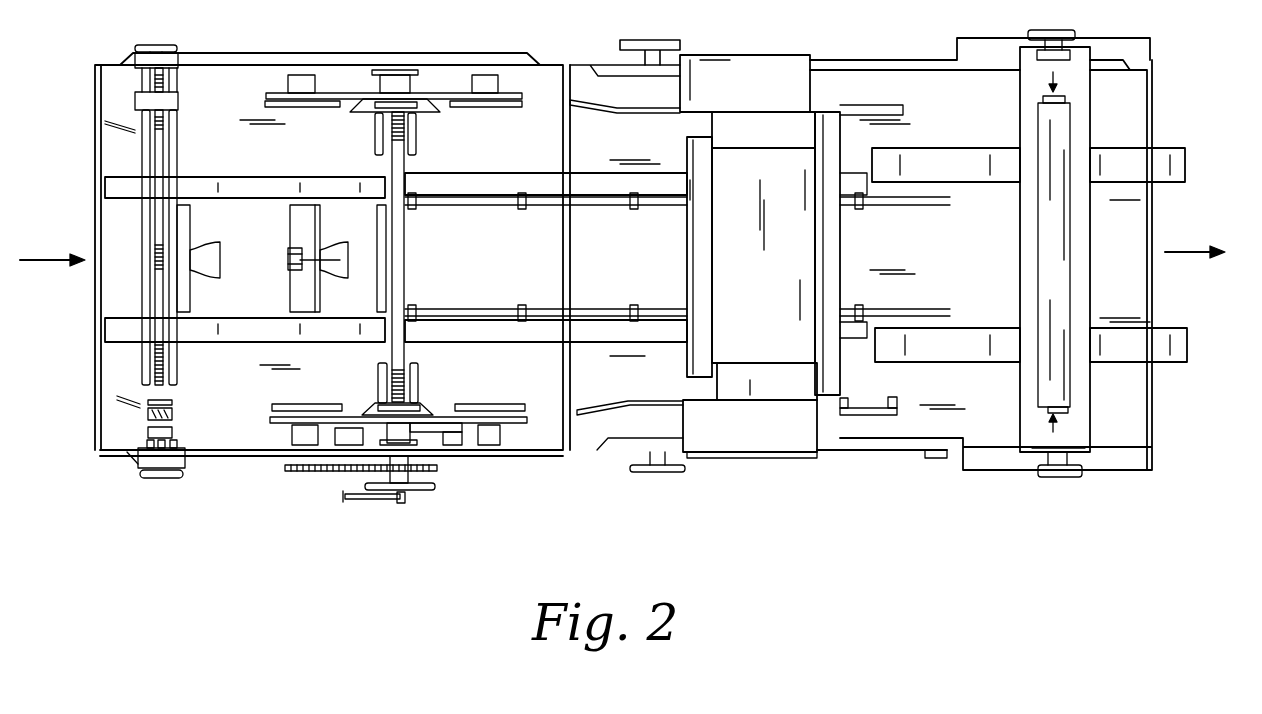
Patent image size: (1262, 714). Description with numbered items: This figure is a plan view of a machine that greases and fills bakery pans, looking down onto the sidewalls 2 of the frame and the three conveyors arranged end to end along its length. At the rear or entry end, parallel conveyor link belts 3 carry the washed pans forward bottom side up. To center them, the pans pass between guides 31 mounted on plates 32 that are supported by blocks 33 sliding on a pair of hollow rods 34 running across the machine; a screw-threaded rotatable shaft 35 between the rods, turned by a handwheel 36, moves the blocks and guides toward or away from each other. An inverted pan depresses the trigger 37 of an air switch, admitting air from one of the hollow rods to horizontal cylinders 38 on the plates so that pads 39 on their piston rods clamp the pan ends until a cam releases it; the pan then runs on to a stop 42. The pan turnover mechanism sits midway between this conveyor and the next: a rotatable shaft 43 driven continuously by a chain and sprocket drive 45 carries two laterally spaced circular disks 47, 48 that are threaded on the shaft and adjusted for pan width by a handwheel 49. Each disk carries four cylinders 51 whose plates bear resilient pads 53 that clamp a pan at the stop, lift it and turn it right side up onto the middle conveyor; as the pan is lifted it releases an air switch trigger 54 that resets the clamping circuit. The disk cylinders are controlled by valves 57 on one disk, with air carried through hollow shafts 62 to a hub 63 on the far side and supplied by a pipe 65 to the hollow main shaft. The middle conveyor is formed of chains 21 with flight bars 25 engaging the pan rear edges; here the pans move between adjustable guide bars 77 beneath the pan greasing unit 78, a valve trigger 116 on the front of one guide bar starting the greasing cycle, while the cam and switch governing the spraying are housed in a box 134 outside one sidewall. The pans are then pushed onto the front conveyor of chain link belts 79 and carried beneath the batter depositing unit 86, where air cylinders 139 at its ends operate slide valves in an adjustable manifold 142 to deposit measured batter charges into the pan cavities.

The sidewalls 2 is at (595, 65).
The conveyor link belts 3 is at (249, 200).
The chains 21 is at (592, 207).
The flight bars 25 is at (635, 308).
The guides 31 is at (103, 122).
The plates 32 is at (175, 412).
The blocks 33 is at (178, 102).
The hollow rods 34 is at (172, 163).
The rotatable shaft 35 is at (157, 344).
The handwheel 36 is at (165, 46).
The trigger 37 is at (214, 272).
The horizontal cylinders 38 is at (173, 432).
The pads 39 is at (172, 401).
The stop 42 is at (377, 290).
The rotatable shaft 43 is at (403, 275).
The chain and sprocket drive 45 is at (330, 473).
The circular disk 47 is at (268, 97).
The circular disk 48 is at (510, 423).
The handwheel 49 is at (425, 489).
The cylinders 51 is at (290, 79).
The resilient pads 53 is at (478, 107).
The air switch trigger 54 is at (325, 243).
The valves 57 is at (448, 446).
The hollow shafts 62 is at (412, 392).
The hub 63 is at (375, 90).
The pipe 65 is at (368, 500).
The guide bars 77 is at (653, 401).
The pan greasing unit 78 is at (771, 268).
The chain link belts 79 is at (1170, 150).
The batter depositing unit 86 is at (1020, 263).
The valve trigger 116 is at (897, 404).
The box 134 is at (928, 457).
The air cylinders 139 is at (1060, 477).
The manifold 142 is at (1063, 245).